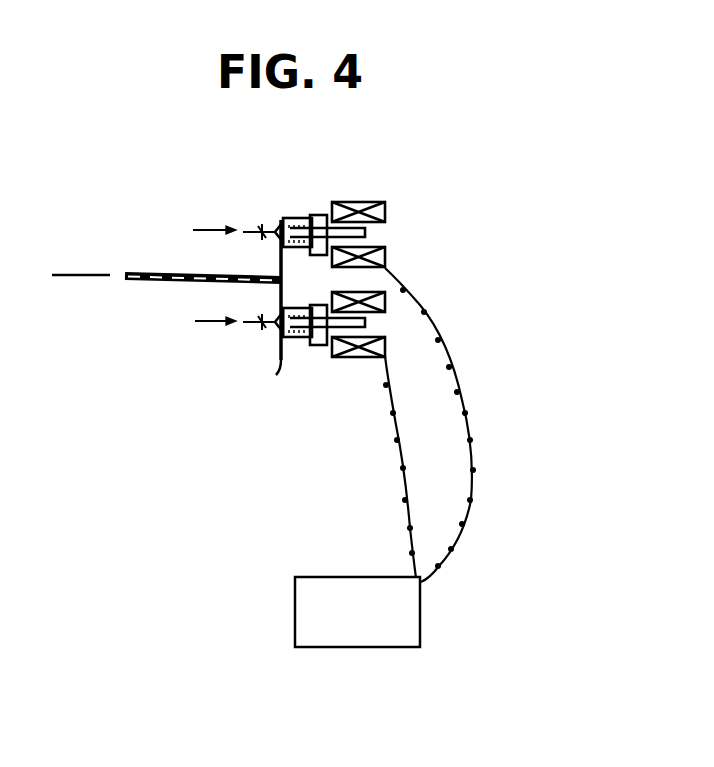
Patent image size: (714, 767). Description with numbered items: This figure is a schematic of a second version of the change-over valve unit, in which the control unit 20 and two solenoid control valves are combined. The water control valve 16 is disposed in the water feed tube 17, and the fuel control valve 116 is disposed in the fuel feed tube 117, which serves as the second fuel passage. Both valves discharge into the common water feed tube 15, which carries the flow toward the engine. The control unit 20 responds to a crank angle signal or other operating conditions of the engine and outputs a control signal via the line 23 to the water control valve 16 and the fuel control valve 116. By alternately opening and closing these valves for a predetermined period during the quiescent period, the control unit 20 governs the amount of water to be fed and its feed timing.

The water feed tube 15 is at (128, 276).
The water feed control valve 16 is at (286, 222).
The fuel control valve 116 is at (278, 364).
The water feed tube 17 is at (204, 228).
The fuel feed tube 117 is at (204, 320).
The line 23 is at (406, 441).
The control unit 20 is at (295, 612).